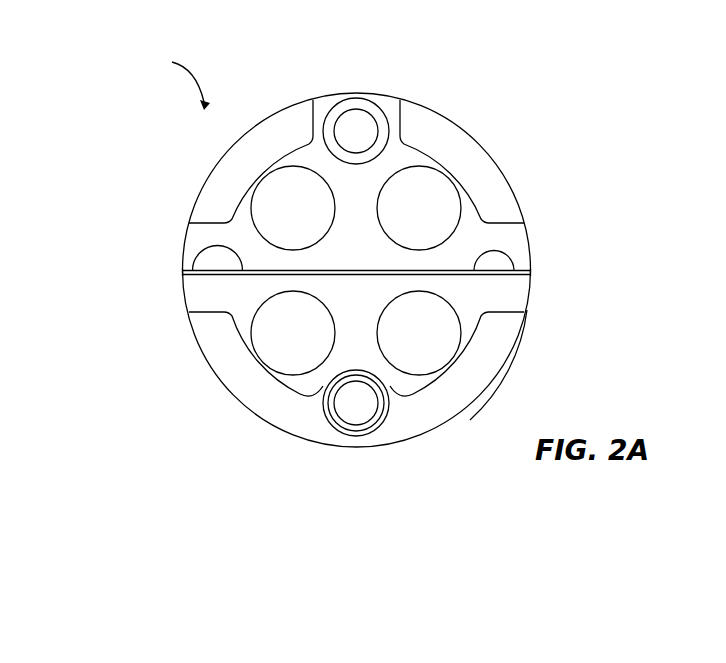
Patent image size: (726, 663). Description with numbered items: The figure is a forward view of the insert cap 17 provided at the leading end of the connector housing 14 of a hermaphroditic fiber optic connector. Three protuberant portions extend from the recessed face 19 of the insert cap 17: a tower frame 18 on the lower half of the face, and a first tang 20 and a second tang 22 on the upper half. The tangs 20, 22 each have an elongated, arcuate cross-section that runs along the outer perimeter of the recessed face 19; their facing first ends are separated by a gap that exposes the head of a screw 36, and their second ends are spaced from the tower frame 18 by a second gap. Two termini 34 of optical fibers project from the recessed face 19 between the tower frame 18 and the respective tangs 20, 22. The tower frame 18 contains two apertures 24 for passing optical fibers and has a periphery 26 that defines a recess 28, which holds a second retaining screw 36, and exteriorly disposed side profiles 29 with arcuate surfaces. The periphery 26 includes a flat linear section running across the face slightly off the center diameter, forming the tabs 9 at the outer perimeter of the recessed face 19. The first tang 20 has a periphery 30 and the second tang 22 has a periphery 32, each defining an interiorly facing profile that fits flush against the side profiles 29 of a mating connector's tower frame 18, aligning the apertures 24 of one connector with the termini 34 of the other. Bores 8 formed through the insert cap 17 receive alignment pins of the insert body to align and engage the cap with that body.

The bores 8 is at (228, 247).
The tabs 9 is at (183, 274).
The connector housing 14 is at (448, 120).
The insert cap 17 is at (176, 79).
The tower frame 18 is at (531, 283).
The recessed face 19 is at (312, 98).
The first tang 20 is at (487, 180).
The second tang 22 is at (210, 203).
The apertures 24 is at (263, 297).
The periphery 26 is at (497, 315).
The recess 28 is at (385, 392).
The exteriorly disposed side profiles 29 is at (260, 368).
The periphery of first tang 30 is at (293, 208).
The periphery of second tang 32 is at (419, 208).
The termini 34 is at (312, 250).
The screw 36 is at (370, 106).